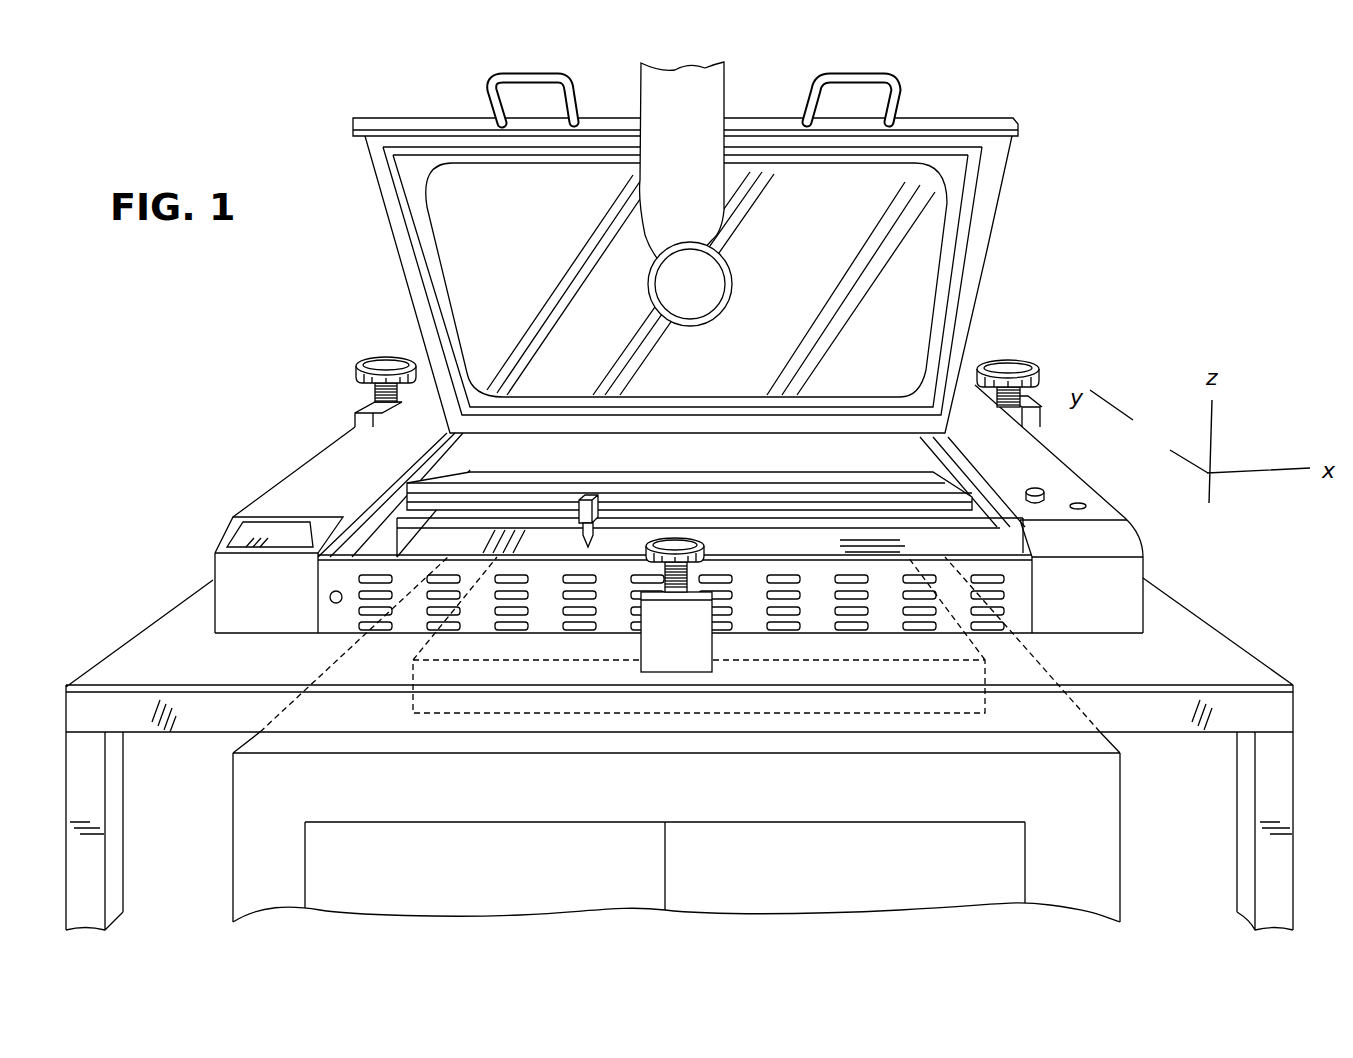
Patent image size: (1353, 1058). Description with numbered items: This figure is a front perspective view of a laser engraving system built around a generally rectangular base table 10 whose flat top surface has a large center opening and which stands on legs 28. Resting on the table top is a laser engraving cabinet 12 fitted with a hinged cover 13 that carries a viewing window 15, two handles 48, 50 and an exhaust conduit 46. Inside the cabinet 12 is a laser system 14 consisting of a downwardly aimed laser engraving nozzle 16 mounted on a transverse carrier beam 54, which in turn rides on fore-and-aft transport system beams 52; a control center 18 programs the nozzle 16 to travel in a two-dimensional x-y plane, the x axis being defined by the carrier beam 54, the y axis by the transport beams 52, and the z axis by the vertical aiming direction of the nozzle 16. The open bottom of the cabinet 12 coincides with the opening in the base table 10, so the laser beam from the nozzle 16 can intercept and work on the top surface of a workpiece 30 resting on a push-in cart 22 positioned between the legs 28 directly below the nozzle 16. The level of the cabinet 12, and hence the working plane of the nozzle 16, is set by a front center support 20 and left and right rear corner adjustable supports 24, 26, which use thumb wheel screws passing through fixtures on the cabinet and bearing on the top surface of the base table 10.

The base table 10 is at (143, 654).
The laser engraving cabinet 12 is at (1100, 513).
The hinged cover 13 is at (978, 231).
The laser system 14 is at (432, 480).
The viewing window 15 is at (873, 188).
The laser engraving nozzle 16 is at (578, 505).
The control center 18 is at (285, 500).
The front center support 20 is at (640, 637).
The cart 22 is at (354, 798).
The left rear corner adjustable support 24 is at (377, 357).
The right rear corner adjustable support 26 is at (1017, 357).
The legs 28 is at (118, 818).
The workpiece 30 is at (410, 660).
The exhaust conduit 46 is at (728, 98).
The handle 48 is at (530, 72).
The handle 50 is at (853, 72).
The fore-and-aft transport system beams 52 is at (393, 522).
The transverse carrier beam 54 is at (735, 500).